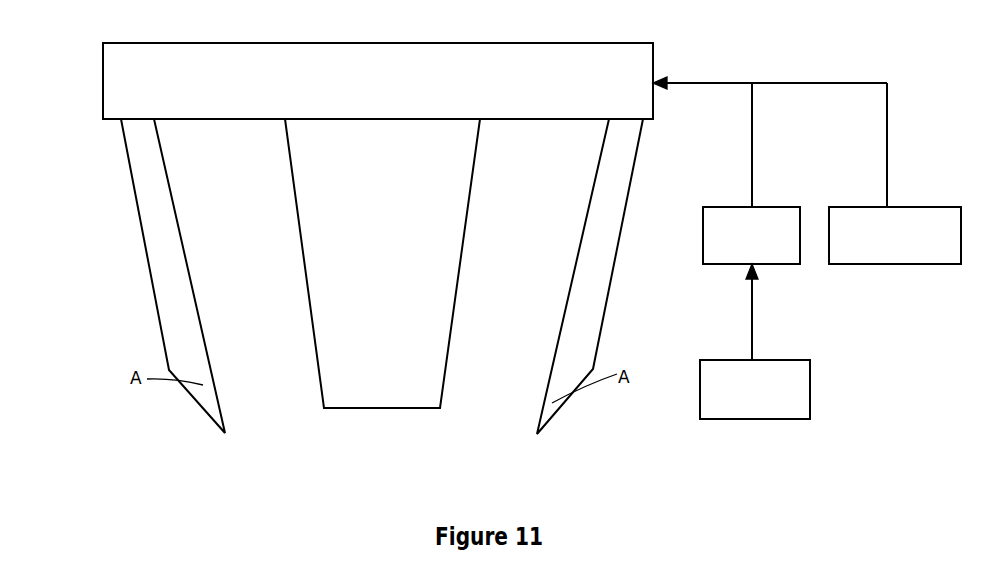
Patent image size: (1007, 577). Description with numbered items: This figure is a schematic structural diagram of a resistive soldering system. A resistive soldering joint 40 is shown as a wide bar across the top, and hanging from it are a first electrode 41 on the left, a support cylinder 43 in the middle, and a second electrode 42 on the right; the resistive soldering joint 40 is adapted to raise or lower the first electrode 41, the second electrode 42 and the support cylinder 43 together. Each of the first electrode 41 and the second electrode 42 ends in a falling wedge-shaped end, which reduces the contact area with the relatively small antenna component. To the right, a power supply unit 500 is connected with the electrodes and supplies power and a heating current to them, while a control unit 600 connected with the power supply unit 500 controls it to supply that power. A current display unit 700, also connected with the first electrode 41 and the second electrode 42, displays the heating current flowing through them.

The resistive soldering joint 40 is at (119, 93).
The first electrode 41 is at (170, 210).
The second electrode 42 is at (598, 253).
The support cylinder 43 is at (315, 161).
The power supply unit 500 is at (732, 215).
The control unit 600 is at (732, 375).
The current display unit 700 is at (868, 215).